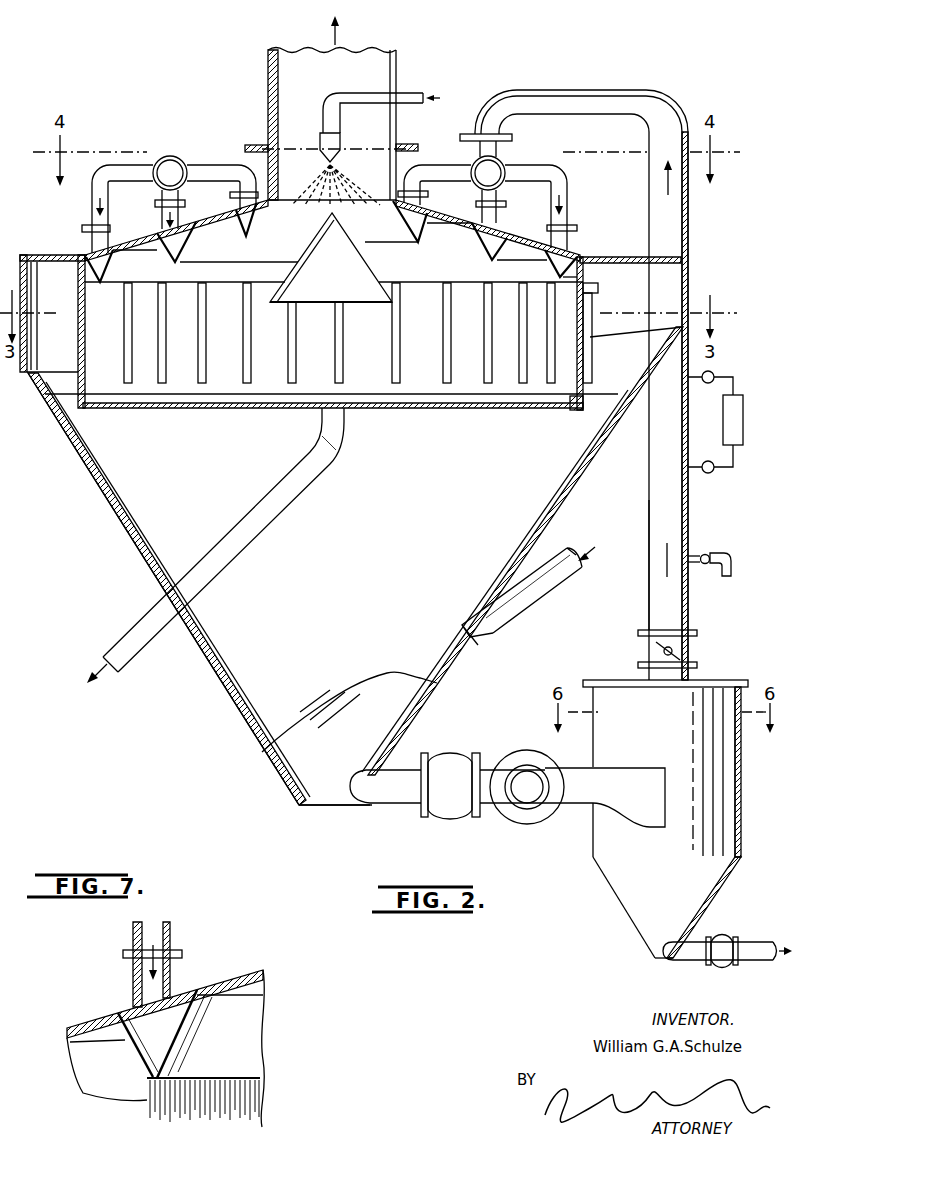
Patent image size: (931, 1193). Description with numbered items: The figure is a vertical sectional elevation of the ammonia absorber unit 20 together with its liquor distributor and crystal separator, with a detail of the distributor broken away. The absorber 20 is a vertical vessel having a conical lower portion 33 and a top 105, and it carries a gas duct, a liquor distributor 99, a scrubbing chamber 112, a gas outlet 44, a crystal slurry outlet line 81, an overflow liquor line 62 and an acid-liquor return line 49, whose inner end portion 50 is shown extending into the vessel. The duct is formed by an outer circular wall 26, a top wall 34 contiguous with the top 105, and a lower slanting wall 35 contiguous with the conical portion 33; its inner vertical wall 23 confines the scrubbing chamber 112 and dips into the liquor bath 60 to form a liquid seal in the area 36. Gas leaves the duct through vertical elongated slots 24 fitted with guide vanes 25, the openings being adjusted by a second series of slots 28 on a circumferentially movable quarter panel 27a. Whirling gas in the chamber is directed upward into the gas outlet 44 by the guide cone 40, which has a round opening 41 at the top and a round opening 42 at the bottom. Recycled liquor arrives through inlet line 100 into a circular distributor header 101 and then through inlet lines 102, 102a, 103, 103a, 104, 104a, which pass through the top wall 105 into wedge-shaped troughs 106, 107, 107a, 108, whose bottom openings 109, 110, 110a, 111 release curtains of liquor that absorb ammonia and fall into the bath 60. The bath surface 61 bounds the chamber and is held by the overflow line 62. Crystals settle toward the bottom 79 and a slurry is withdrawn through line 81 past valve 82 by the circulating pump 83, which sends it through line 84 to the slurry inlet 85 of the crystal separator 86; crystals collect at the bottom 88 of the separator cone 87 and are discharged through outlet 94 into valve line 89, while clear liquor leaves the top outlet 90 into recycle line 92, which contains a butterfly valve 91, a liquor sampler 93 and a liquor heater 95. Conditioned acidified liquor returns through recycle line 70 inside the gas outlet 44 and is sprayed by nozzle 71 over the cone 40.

In FIG. 2, the ammonia absorber unit 20 is at (106, 518).
In FIG. 2, the inner vertical wall 23 is at (586, 270).
In FIG. 2, the vertical elongated slots 24 is at (586, 370).
In FIG. 2, the guide vanes 25 is at (594, 292).
In FIG. 2, the outer circular wall 26 is at (22, 257).
In FIG. 2, the curved quarter panel 27a is at (570, 402).
In FIG. 2, the second series of vertical elongated slots 28 is at (450, 341).
In FIG. 2, the conical lower portion 33 is at (137, 552).
In FIG. 2, the top wall 34 is at (581, 385).
In FIG. 2, the lower slanting wall 35 is at (640, 382).
In FIG. 2, the liquid seal area 36 is at (599, 407).
In FIG. 2, the guide cone 40 is at (303, 258).
In FIG. 2, the round opening at the top of the cone 41 is at (338, 212).
In FIG. 2, the round opening at the bottom of the cone 42 is at (350, 305).
In FIG. 2, the gas outlet 44 is at (268, 70).
In FIG. 2, the acid-liquor return line 49 is at (538, 600).
In FIG. 2, the return pipe outlet 50 is at (487, 604).
In FIG. 2, the liquor bath 60 is at (362, 587).
In FIG. 2, the surface of the liquor bath 61 is at (430, 395).
In FIG. 2, the overflow liquor line 62 is at (138, 640).
In FIG. 2, the recycle line 70 is at (424, 96).
In FIG. 2, the nozzle 71 is at (340, 147).
In FIG. 2, the bottom of the absorber 79 is at (345, 808).
In FIG. 2, the crystal slurry outlet line 81 is at (405, 770).
In FIG. 2, the valve 82 is at (440, 818).
In FIG. 2, the circulating pump 83 is at (520, 822).
In FIG. 2, the line 84 is at (585, 767).
In FIG. 2, the slurry inlet 85 is at (660, 830).
In FIG. 2, the crystal separator 86 is at (742, 785).
In FIG. 2, the separator cone 87 is at (628, 910).
In FIG. 2, the bottom of the separator cone 88 is at (672, 960).
In FIG. 2, the valve line 89 is at (745, 960).
In FIG. 2, the top outlet 90 is at (697, 680).
In FIG. 2, the butterfly valve 91 is at (648, 655).
In FIG. 2, the recycle line 92 is at (690, 538).
In FIG. 2, the liquor sampler 93 is at (731, 560).
In FIG. 2, the outlet 94 is at (693, 960).
In FIG. 2, the liquor heater 95 is at (743, 420).
In FIG. 2, the liquor distributor 99 is at (170, 145).
In FIG. 2, the inlet line 100 is at (512, 150).
In FIG. 2, the circular distributor header 101 is at (220, 160).
In FIG. 2, the inlet line 102 is at (572, 196).
In FIG. 2, the inlet line 102a is at (92, 200).
In FIG. 2, the inlet line 103 is at (512, 196).
In FIG. 2, the inlet line 103a is at (156, 203).
In FIG. 7, the inlet line 103a is at (170, 935).
In FIG. 2, the inlet line 104 is at (458, 163).
In FIG. 2, the inlet line 104a is at (323, 138).
In FIG. 2, the top wall 105 is at (150, 236).
In FIG. 7, the top wall 105 is at (240, 968).
In FIG. 2, the wedge-shaped trough 106 is at (420, 228).
In FIG. 2, the wedge-shaped trough 107 is at (496, 250).
In FIG. 7, the wedge-shaped trough 107a is at (123, 1050).
In FIG. 2, the wedge-shaped trough 108 is at (548, 267).
In FIG. 2, the trough opening 109 is at (292, 245).
In FIG. 2, the trough opening 110 is at (490, 262).
In FIG. 7, the trough opening 110a is at (147, 1077).
In FIG. 2, the trough opening 111 is at (560, 280).
In FIG. 2, the scrubbing chamber 112 is at (232, 352).